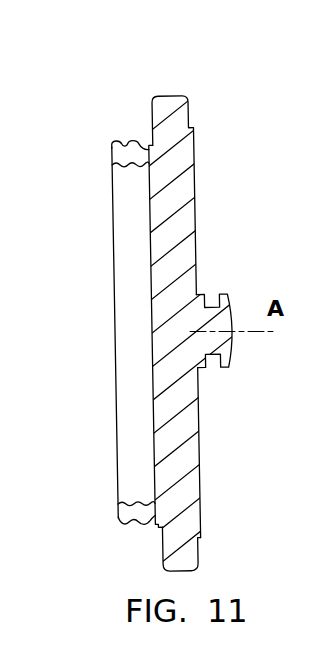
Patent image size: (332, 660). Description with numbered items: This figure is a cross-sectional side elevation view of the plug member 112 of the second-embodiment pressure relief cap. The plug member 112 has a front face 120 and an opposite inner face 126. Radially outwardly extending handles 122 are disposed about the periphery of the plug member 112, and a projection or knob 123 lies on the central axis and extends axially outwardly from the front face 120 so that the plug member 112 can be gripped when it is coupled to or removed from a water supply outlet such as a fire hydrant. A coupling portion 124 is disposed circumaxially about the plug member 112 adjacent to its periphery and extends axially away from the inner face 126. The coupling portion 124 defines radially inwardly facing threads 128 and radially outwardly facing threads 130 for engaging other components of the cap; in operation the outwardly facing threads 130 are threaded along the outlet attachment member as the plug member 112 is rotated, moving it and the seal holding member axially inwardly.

The plug member 112 is at (170, 308).
The front face 120 is at (200, 481).
The handles 122 is at (189, 112).
The projection or knob 123 is at (230, 300).
The coupling portion 124 is at (124, 534).
The inner face 126 is at (149, 276).
The radially inwardly facing threads 128 is at (122, 168).
The radially outwardly facing threads 130 is at (127, 141).